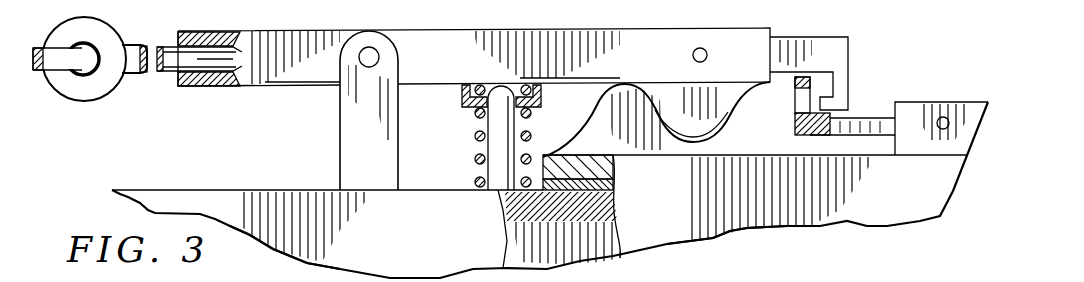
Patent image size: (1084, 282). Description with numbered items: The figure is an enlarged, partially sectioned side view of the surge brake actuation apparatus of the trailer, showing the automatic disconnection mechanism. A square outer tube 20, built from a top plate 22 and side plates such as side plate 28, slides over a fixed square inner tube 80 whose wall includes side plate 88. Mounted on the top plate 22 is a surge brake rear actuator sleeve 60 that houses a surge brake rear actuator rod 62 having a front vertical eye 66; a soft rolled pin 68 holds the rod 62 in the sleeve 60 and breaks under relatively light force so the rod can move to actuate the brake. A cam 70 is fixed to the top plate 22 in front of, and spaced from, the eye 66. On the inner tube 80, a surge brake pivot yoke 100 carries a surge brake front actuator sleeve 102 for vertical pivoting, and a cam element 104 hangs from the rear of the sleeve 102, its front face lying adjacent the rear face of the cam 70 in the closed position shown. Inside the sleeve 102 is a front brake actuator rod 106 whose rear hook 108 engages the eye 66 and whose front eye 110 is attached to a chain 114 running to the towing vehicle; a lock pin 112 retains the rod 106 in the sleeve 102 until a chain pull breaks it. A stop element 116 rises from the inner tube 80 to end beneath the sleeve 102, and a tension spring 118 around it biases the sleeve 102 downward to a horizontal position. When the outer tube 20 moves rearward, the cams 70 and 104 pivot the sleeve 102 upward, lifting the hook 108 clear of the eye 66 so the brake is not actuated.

The outer tube 20 is at (841, 234).
The top plate 22 is at (613, 165).
The side plate 28 is at (724, 236).
The surge brake rear actuator sleeve 60 is at (930, 101).
The surge brake rear actuator rod 62 is at (498, 204).
The front vertical eye 66 is at (795, 128).
The pin 68 is at (945, 130).
The cam 70 is at (596, 141).
The inner tube 80 is at (232, 180).
The side plate 88 is at (312, 264).
The surge brake pivot yoke 100 is at (341, 132).
The surge brake front actuator sleeve 102 is at (303, 30).
The cam element 104 is at (718, 135).
The front brake actuator rod 106 is at (157, 47).
The rear hook 108 is at (850, 78).
The front eye 110 is at (108, 93).
The pin 112 is at (692, 55).
The chain 114 is at (42, 66).
The stop element 116 is at (502, 118).
The tension spring 118 is at (473, 160).